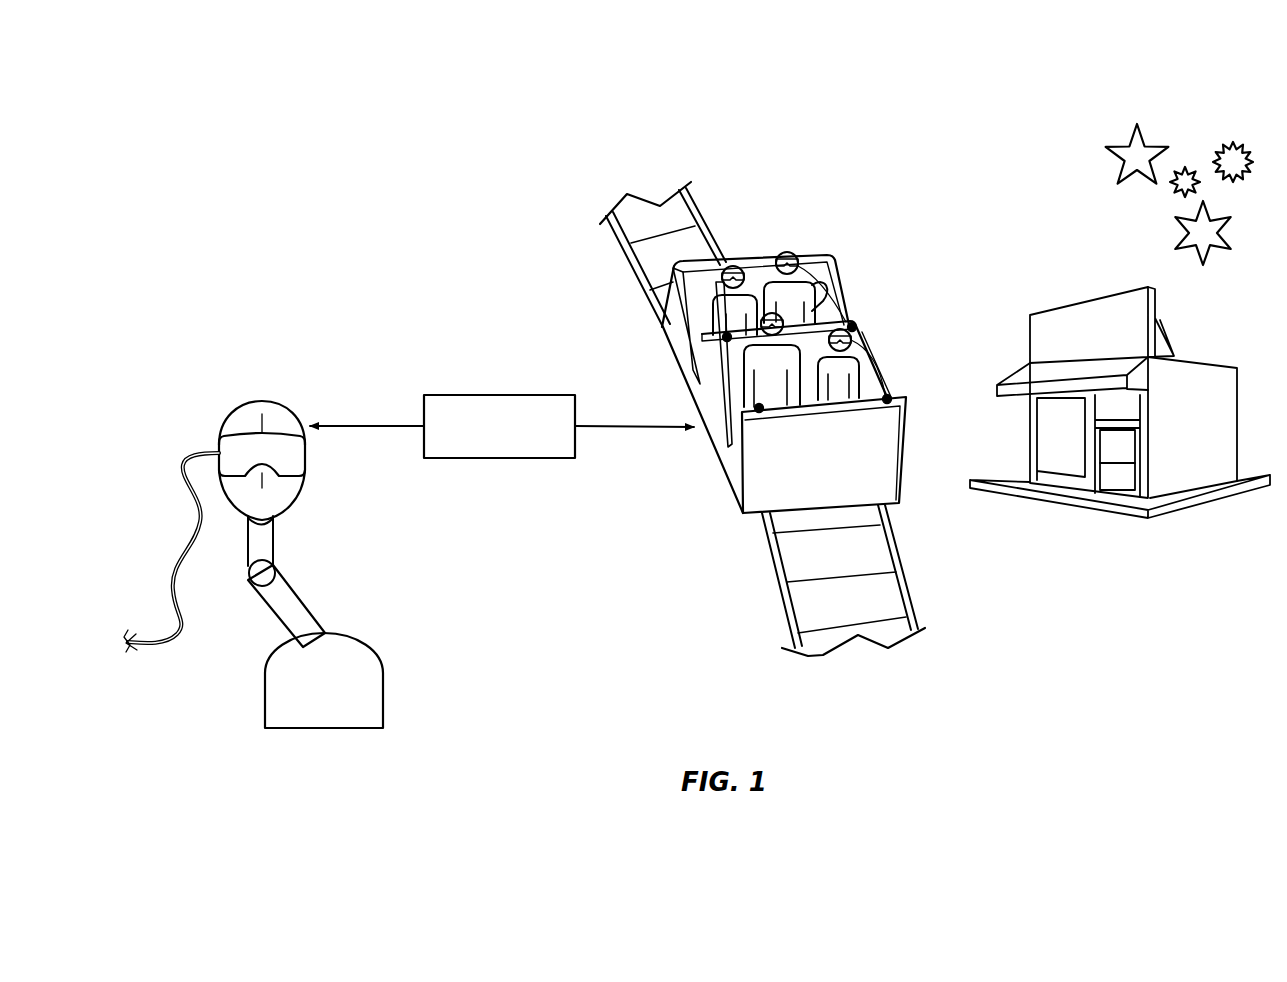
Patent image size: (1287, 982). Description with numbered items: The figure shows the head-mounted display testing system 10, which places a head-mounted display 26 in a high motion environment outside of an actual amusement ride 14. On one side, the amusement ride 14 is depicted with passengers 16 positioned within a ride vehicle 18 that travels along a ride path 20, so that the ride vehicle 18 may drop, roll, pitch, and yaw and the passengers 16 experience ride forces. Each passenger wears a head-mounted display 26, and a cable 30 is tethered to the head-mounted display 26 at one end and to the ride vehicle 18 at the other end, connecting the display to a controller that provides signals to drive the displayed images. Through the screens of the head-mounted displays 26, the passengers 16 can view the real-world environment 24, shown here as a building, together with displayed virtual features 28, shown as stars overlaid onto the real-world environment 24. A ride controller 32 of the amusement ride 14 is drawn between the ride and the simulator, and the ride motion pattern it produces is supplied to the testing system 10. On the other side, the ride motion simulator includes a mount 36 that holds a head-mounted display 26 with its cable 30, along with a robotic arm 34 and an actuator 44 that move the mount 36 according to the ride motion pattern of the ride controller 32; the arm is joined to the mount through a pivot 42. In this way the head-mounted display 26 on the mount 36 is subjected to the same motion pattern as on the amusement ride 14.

The head-mounted display testing system 10 is at (226, 362).
The amusement ride 14 is at (871, 230).
The passengers 16 is at (712, 300).
The ride vehicle 18 is at (904, 450).
The ride path 20 is at (768, 556).
The real-world environment 24 is at (1127, 110).
The head-mounted display 26 is at (308, 455).
The virtual features 28 is at (1120, 147).
The cable 30 is at (199, 531).
The ride controller 32 is at (502, 395).
The robotic arm 34 is at (308, 608).
The mount 36 is at (262, 402).
The joint 42 is at (247, 578).
The actuator 44 is at (277, 517).